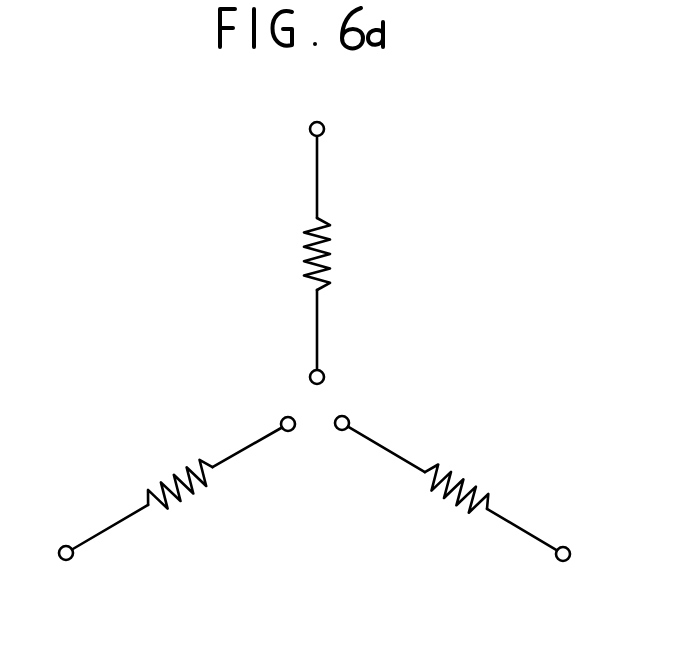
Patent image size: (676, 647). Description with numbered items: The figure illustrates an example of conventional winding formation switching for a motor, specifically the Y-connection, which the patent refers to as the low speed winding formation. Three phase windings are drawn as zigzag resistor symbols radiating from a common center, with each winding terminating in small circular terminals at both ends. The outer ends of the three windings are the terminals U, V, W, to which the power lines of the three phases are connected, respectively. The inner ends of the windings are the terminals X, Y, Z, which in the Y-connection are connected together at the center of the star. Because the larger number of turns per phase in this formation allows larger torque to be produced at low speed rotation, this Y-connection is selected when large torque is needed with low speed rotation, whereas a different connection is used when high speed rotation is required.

The terminal U is at (317, 226).
The terminal V is at (154, 511).
The terminal W is at (475, 510).
The terminal X is at (303, 379).
The terminal Y is at (298, 442).
The terminal Z is at (347, 404).